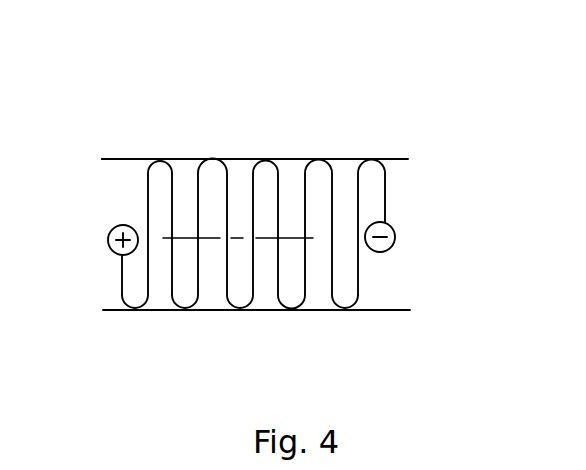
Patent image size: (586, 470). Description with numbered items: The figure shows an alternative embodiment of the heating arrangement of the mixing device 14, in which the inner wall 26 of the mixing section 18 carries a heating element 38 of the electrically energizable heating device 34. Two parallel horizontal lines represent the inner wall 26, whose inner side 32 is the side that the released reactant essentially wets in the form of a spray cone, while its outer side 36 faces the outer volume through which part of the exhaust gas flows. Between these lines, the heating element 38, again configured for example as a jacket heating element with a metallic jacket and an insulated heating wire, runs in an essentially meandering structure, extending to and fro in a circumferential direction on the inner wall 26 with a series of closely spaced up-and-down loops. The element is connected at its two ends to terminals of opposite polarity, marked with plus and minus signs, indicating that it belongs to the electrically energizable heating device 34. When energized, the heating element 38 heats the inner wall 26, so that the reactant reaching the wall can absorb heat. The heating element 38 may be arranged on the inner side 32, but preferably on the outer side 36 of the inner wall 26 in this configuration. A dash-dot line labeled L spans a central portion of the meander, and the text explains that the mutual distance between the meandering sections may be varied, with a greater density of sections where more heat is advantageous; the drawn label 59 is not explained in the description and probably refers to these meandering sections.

The mixing device 14 is at (252, 120).
The mixing section 18 is at (378, 328).
The inner wall 26 is at (345, 159).
The inner side 32 is at (115, 163).
The electrically energizable heating device 34 is at (372, 283).
The outer side 36 is at (137, 159).
The heating element 38 is at (174, 255).
The end segment of serpentine 59 is at (358, 202).
The length of central section L is at (287, 240).